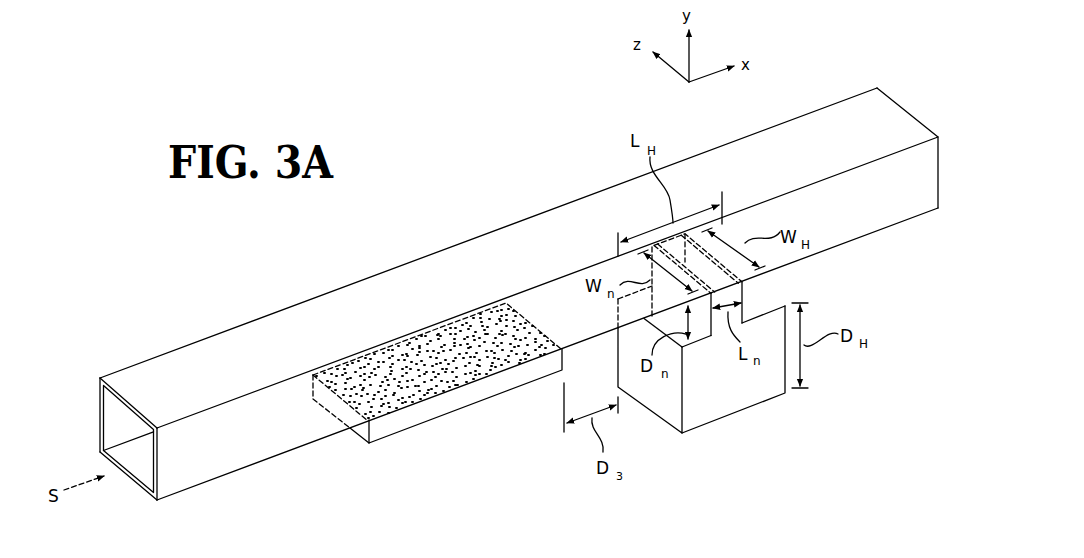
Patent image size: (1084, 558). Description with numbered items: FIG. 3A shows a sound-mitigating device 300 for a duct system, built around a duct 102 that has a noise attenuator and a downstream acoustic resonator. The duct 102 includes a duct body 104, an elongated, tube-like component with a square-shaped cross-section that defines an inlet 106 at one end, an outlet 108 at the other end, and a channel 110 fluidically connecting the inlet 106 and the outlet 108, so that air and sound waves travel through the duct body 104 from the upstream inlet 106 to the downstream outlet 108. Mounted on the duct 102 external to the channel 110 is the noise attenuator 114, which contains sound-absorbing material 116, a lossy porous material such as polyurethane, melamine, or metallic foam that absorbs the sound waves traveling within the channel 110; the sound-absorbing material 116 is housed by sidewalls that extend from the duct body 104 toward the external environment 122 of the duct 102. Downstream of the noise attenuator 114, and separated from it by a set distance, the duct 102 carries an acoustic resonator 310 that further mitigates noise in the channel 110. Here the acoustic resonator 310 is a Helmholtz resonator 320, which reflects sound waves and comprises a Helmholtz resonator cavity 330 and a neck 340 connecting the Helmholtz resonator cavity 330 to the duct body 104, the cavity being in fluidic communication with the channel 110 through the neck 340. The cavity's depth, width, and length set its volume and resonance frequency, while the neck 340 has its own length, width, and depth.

The duct 102 is at (497, 228).
The duct body 104 is at (592, 194).
The inlet 106 is at (100, 378).
The outlet 108 is at (877, 88).
The channel 110 is at (118, 418).
The noise attenuator 114 is at (395, 436).
The sound-absorbing material 116 is at (358, 366).
The external environment 122 is at (902, 423).
The sound-mitigating device 300 is at (511, 104).
The acoustic resonator 310 is at (692, 436).
The Helmholtz resonator 320 is at (773, 403).
The Helmholtz resonator cavity 330 is at (725, 401).
The neck 340 is at (748, 297).